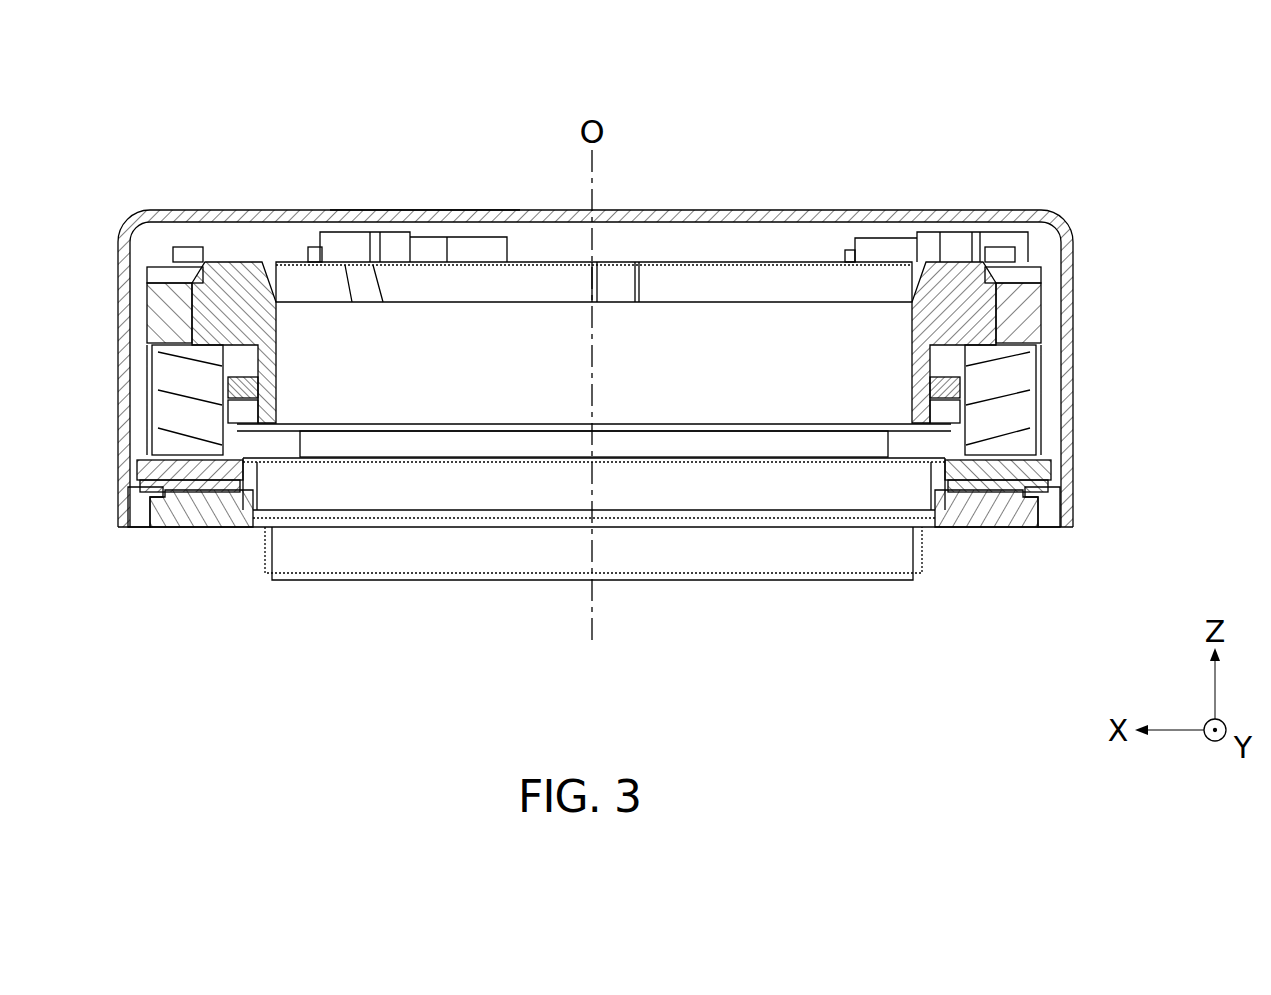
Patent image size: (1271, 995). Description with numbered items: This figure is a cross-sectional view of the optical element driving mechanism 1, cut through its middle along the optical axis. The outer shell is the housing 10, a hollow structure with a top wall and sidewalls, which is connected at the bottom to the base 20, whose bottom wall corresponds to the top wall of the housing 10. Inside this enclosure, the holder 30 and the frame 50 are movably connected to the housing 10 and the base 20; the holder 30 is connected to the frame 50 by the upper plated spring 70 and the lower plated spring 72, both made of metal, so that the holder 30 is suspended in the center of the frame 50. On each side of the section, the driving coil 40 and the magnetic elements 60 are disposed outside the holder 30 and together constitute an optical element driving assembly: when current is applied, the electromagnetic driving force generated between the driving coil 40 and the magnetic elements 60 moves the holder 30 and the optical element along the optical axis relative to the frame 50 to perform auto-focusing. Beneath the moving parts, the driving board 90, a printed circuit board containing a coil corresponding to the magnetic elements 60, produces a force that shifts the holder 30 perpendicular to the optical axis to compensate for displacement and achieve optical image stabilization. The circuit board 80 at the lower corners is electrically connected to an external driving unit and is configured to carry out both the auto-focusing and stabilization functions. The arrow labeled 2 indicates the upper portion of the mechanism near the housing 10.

The optical element driving mechanism 1 is at (117, 117).
The lens unit 2 is at (423, 210).
The housing 10 is at (995, 218).
The base 20 is at (210, 505).
The holder 30 is at (238, 300).
The driving coil 40 is at (245, 392).
The frame 50 is at (147, 306).
The magnetic elements 60 is at (170, 376).
The upper plated spring 70 is at (745, 262).
The lower plated spring 72 is at (745, 432).
The circuit board 80 is at (150, 490).
The driving board 90 is at (160, 468).